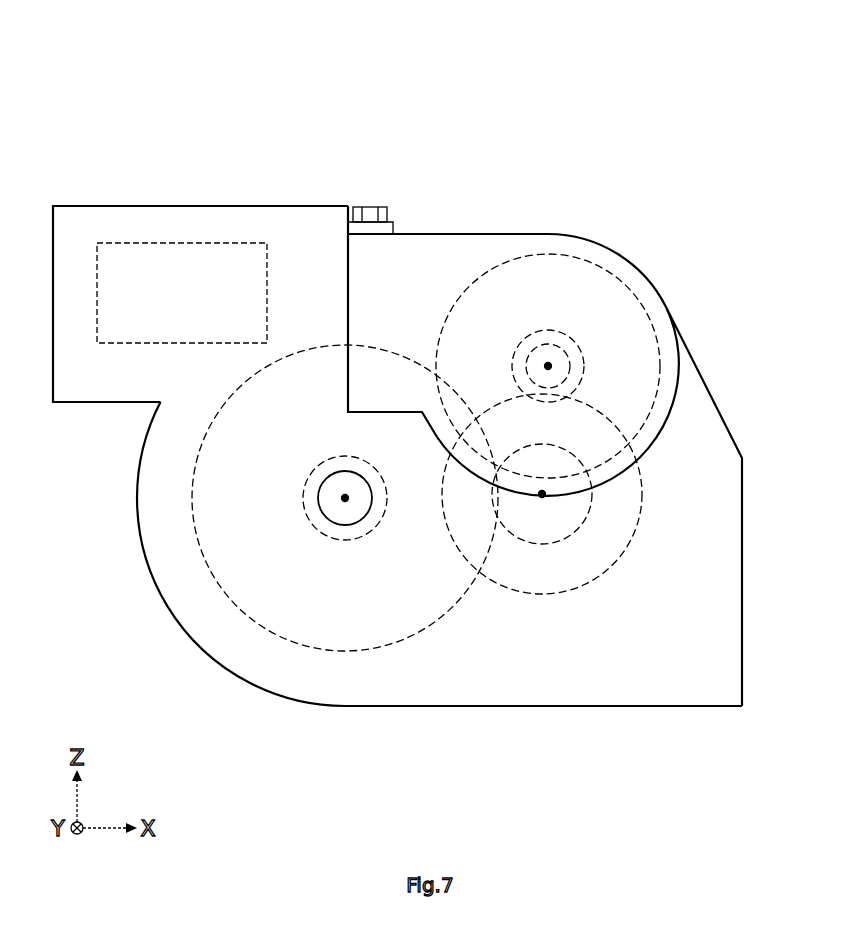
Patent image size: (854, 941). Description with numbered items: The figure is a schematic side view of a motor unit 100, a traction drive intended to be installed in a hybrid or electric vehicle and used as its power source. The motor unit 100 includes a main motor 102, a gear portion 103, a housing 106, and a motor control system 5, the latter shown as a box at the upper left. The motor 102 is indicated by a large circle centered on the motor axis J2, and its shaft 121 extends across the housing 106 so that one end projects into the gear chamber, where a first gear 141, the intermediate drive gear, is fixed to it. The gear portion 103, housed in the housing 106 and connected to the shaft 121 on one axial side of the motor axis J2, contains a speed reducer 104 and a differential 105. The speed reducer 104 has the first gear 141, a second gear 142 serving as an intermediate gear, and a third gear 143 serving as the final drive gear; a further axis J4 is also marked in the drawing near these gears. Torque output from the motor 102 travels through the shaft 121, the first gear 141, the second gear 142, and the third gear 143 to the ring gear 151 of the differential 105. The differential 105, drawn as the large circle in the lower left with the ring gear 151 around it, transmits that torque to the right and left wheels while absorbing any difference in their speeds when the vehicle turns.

The motor unit 100 is at (657, 100).
The motor control system 5 is at (137, 241).
The housing 106 is at (481, 231).
The motor 102 is at (555, 253).
The motor axis J2 is at (550, 364).
The first gear 141 is at (586, 345).
The shaft 121 is at (586, 372).
The speed reducer 104 is at (647, 498).
The second gear 142 is at (636, 524).
The third gear 143 is at (588, 524).
The fourth joint axis J4 is at (542, 496).
The gear portion 103 is at (487, 634).
The differential 105 is at (312, 522).
The ring gear 151 is at (253, 620).